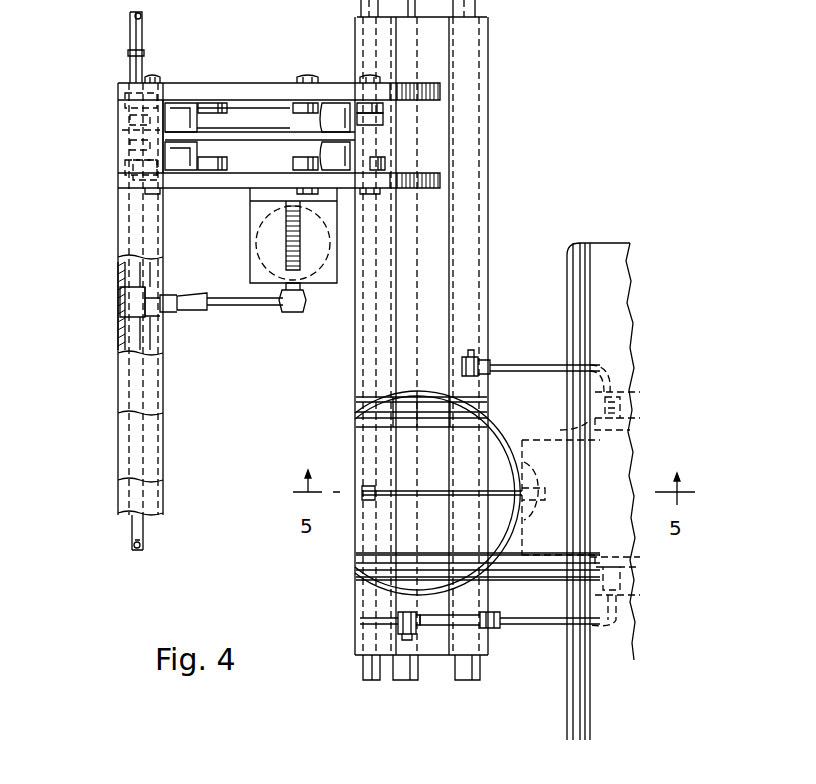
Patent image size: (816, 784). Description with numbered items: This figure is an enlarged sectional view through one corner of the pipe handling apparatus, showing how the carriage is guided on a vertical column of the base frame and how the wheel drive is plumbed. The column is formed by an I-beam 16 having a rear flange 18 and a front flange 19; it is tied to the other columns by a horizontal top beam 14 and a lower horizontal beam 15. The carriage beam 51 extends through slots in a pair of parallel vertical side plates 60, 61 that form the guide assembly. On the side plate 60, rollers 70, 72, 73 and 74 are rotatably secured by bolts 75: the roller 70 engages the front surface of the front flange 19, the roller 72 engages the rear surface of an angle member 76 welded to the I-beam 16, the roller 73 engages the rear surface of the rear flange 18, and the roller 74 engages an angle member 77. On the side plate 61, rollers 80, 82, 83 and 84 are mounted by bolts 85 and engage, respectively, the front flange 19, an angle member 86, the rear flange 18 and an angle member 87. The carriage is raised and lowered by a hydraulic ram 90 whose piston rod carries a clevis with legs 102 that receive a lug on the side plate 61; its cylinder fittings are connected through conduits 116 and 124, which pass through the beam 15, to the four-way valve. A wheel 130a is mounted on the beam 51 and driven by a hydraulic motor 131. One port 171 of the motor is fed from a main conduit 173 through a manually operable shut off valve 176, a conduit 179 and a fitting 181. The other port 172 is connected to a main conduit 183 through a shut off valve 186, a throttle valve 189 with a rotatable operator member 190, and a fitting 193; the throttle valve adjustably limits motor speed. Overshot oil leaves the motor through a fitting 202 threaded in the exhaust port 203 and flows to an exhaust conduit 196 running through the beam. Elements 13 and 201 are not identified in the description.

The conduit 124 is at (143, 30).
The conduit 116 is at (140, 75).
The side plate 60 is at (183, 70).
The rear flange 18 is at (182, 115).
The roller 74 is at (225, 105).
The roller 72 is at (298, 105).
The bolt 75 is at (308, 80).
The front flange 19 is at (342, 117).
The bolt 85 is at (370, 76).
The roller 70 is at (365, 102).
The roller 73 is at (120, 103).
The angle member 77 is at (193, 120).
The angle member 87 is at (193, 147).
The roller 83 is at (120, 165).
The I-beam 16 is at (226, 128).
The angle member 76 is at (320, 122).
The roller 84 is at (225, 163).
The roller 82 is at (298, 160).
The angle member 86 is at (320, 150).
The roller 80 is at (386, 163).
The side plate 61 is at (242, 195).
The hydraulic ram 90 is at (256, 266).
The connecting rod 13 is at (238, 298).
The top beam 14 is at (126, 245).
The lower horizontal beam 15 is at (123, 335).
The horizontal beam 51 is at (490, 192).
The wheel 130a is at (596, 243).
The shut off valve 176 is at (462, 366).
The conduit 179 is at (538, 366).
The hydraulic motor 131 is at (548, 428).
The fitting 181 is at (625, 406).
The port 171 is at (625, 416).
The rod 201 is at (428, 491).
The exhaust port 203 is at (528, 482).
The fitting 202 is at (530, 497).
The port 172 is at (635, 572).
The fitting 193 is at (630, 591).
The shut off valve 186 is at (398, 620).
The throttle valve 189 is at (485, 613).
The leg 102 is at (505, 626).
The exhaust conduit 196 is at (363, 665).
The main conduit 183 is at (398, 672).
The operator member 190 is at (438, 630).
The main conduit 173 is at (462, 676).